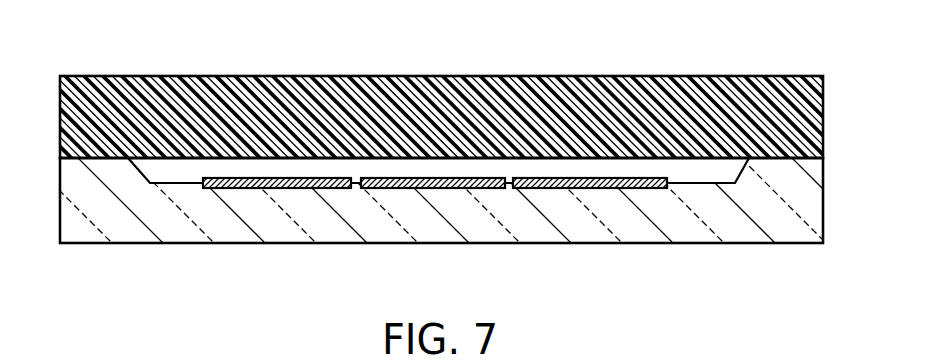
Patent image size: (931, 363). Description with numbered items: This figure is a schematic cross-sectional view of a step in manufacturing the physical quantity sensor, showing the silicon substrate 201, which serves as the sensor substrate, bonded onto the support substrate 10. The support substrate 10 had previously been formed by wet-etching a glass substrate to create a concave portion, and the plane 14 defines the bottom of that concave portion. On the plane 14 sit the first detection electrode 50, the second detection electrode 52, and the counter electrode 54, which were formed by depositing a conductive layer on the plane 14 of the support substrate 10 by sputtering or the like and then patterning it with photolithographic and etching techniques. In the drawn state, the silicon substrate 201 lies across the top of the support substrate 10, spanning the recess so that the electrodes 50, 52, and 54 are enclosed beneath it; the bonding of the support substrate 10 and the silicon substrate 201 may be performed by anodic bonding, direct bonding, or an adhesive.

The support substrate 10 is at (795, 230).
The plane 14 is at (720, 182).
The first detection electrode 50 is at (445, 188).
The second detection electrode 52 is at (280, 188).
The counter electrode 54 is at (597, 188).
The silicon substrate 201 is at (333, 78).